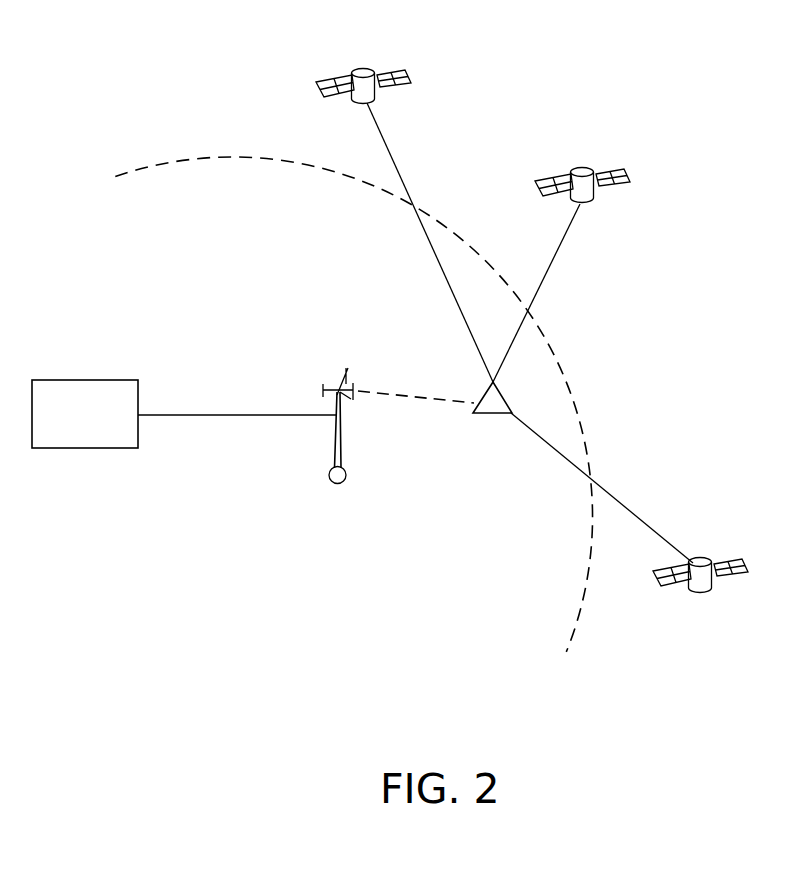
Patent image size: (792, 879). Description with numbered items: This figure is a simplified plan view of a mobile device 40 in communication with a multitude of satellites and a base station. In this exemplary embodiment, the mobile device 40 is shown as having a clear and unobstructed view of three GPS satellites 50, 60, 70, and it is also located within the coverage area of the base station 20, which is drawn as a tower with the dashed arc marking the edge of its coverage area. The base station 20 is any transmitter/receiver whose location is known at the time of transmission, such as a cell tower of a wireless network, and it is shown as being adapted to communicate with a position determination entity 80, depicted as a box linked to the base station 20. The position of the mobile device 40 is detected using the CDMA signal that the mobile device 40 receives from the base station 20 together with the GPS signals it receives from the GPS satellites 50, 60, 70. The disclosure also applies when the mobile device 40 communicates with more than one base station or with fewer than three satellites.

The base station 20 is at (337, 485).
The mobile device 40 is at (435, 415).
The GPS satellite 50 is at (404, 202).
The GPS satellite 60 is at (569, 251).
The GPS satellite 70 is at (637, 503).
The position determination entity 80 is at (78, 450).